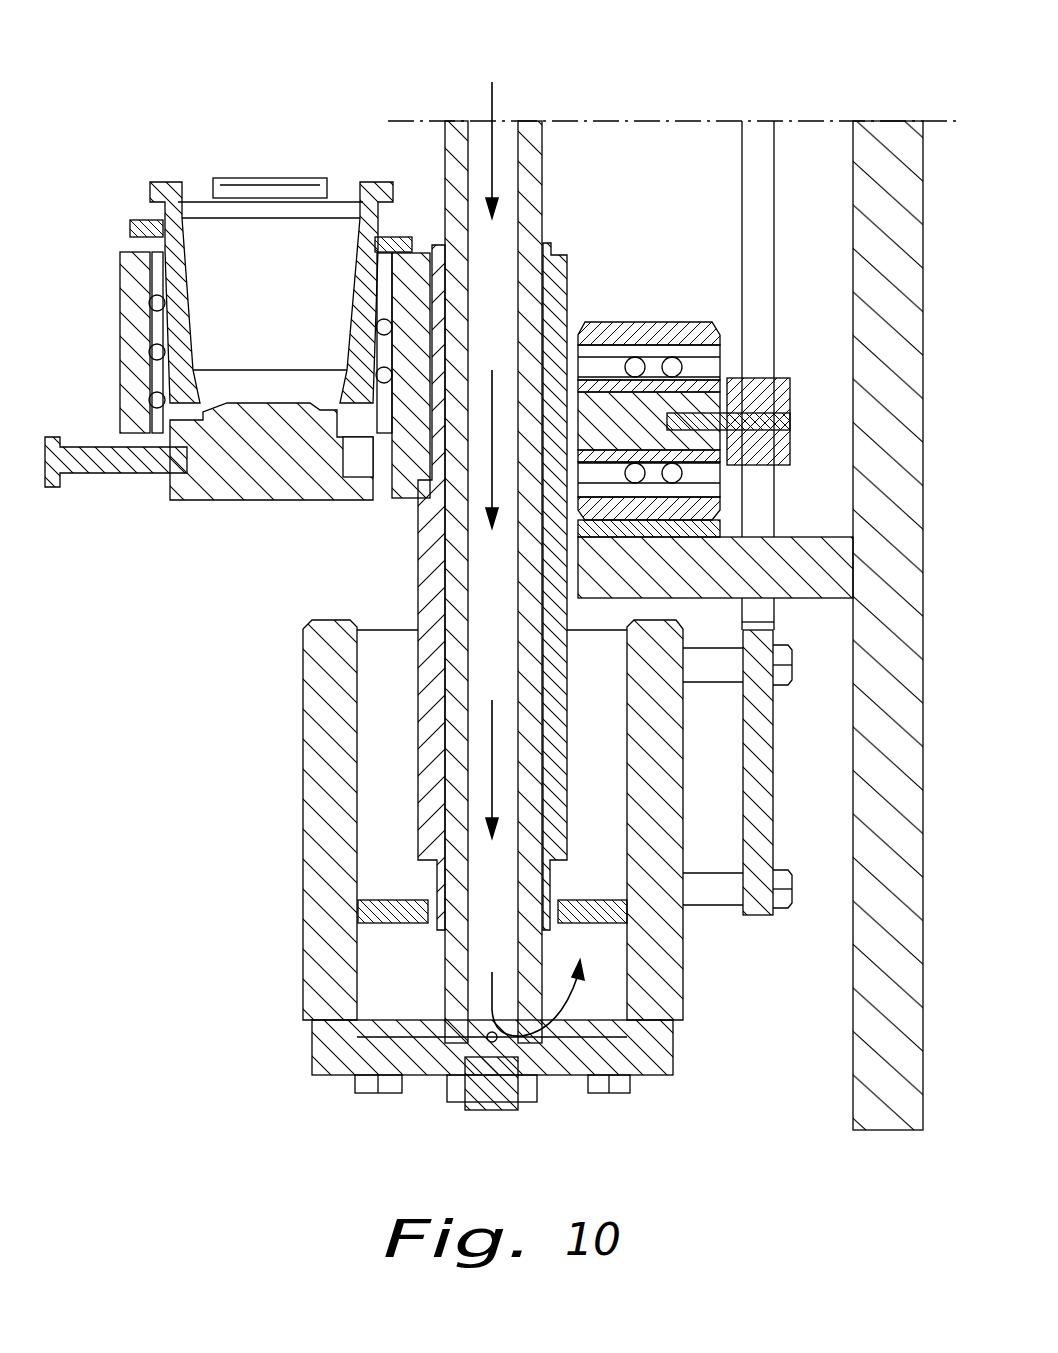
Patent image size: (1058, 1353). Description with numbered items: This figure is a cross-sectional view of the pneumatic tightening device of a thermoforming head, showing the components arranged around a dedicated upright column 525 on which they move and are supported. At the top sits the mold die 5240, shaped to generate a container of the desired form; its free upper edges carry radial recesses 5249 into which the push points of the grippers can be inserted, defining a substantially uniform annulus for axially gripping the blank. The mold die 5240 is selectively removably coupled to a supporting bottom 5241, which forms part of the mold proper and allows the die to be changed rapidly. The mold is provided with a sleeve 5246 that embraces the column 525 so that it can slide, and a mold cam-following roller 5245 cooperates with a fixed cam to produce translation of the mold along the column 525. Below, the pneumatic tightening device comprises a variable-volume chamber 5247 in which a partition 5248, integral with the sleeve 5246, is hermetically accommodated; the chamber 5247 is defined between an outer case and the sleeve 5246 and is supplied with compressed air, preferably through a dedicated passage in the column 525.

The upright column 525 is at (540, 170).
The mold die 5240 is at (272, 293).
The supporting bottom 5241 is at (258, 470).
The mold cam-following roller 5245 is at (655, 345).
The sleeve 5246 is at (430, 565).
The variable-volume chamber 5247 is at (398, 980).
The partition 5248 is at (400, 912).
The radial recesses 5249 is at (565, 302).